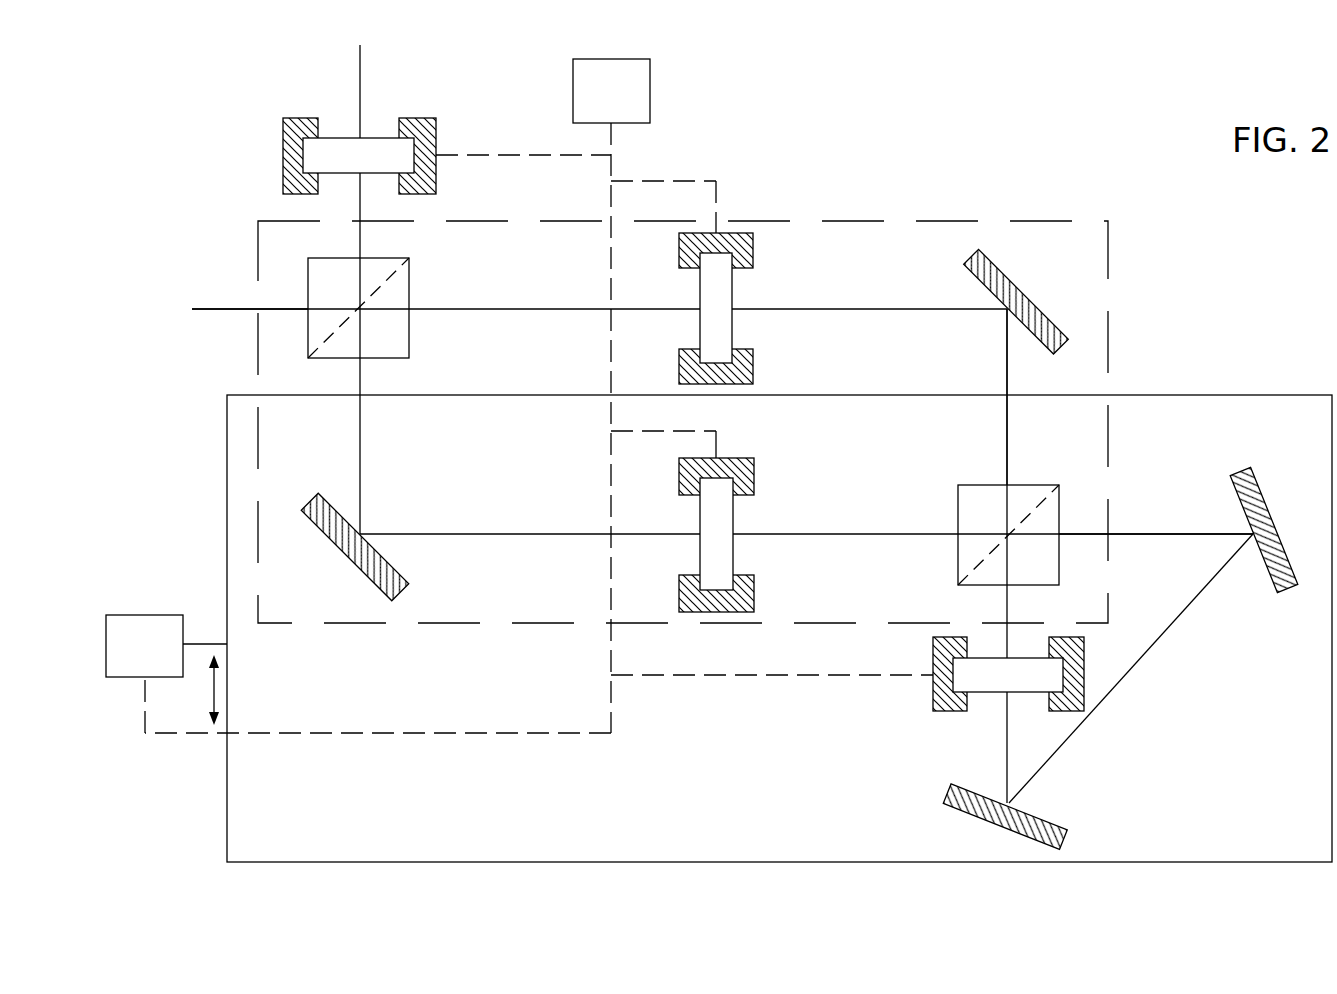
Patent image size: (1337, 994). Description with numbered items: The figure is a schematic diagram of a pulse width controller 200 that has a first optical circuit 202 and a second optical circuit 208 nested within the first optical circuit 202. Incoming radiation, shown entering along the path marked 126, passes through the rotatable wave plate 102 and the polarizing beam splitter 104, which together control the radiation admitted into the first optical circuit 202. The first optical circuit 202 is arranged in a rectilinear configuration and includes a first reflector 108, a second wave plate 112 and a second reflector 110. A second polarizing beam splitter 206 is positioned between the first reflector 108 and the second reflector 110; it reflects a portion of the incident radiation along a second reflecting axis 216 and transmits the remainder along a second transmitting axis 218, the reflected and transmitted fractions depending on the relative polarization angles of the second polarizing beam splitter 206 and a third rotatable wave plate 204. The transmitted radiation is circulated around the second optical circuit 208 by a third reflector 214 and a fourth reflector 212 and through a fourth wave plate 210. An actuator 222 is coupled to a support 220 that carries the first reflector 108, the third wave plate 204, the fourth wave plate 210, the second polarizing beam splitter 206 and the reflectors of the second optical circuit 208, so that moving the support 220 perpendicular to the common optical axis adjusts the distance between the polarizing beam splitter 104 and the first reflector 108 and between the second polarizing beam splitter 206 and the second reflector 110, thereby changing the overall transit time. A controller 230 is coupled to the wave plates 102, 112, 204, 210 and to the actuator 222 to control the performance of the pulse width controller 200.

The pulse width controller 200 is at (956, 84).
The first optical circuit 202 is at (904, 221).
The support 220 is at (227, 553).
The controller 230 is at (631, 102).
The actuator 222 is at (164, 657).
The rotatable wave plate 102 is at (446, 104).
The polarizing beam splitter 104 is at (377, 358).
The input beam 126 is at (218, 307).
The second wave plate 112 is at (765, 240).
The second reflector 110 is at (1040, 312).
The second reflecting axis 216 is at (1007, 372).
The first reflector 108 is at (333, 538).
The third rotatable wave plate 204 is at (679, 597).
The second polarizing beam splitter 206 is at (985, 485).
The second transmitting axis 218 is at (1157, 534).
The third reflector 214 is at (1275, 528).
The second optical circuit 208 is at (1176, 664).
The fourth wave plate 210 is at (933, 648).
The fourth reflector 212 is at (988, 826).